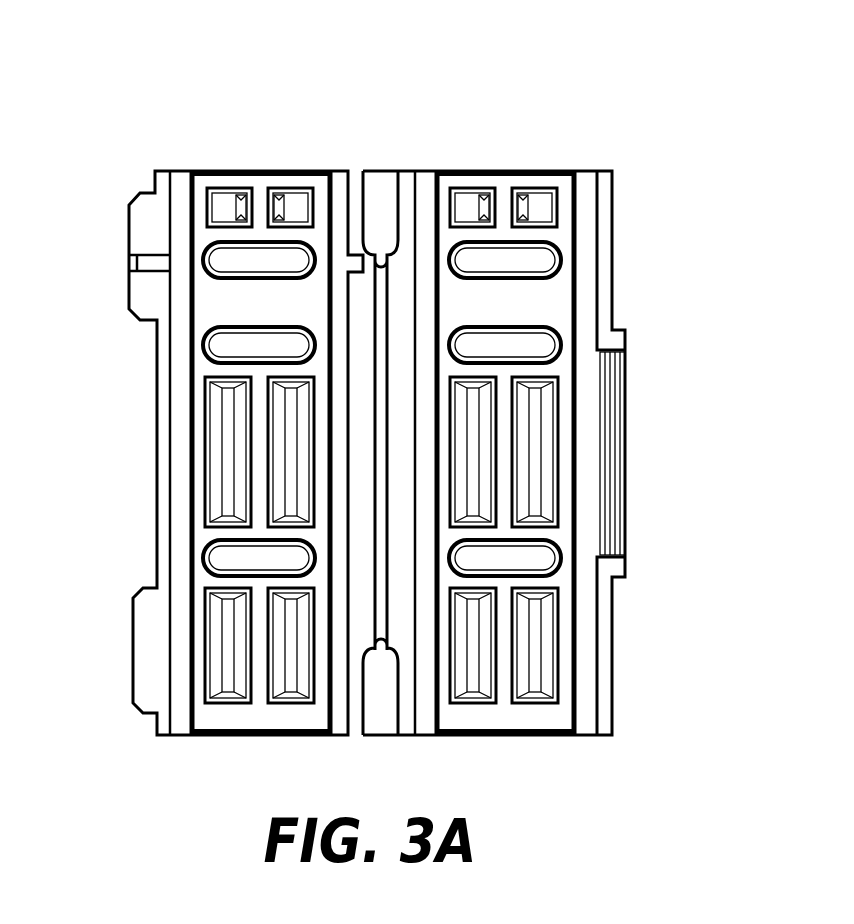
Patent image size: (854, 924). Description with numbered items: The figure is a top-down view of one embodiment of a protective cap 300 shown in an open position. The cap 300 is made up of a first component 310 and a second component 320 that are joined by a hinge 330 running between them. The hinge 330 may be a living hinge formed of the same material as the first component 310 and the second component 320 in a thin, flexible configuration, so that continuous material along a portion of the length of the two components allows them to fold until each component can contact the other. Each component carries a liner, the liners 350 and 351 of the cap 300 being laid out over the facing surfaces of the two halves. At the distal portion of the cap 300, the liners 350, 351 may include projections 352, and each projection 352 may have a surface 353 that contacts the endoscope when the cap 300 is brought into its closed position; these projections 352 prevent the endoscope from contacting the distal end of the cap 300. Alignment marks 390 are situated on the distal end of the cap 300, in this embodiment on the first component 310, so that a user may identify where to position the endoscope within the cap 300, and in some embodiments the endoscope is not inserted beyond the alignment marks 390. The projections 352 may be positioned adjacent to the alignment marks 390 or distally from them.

The cap 300 is at (428, 120).
The first component 310 is at (130, 357).
The second component 320 is at (640, 286).
The hinge 330 is at (377, 668).
The liner 350 is at (190, 742).
The liner 351 is at (582, 742).
The projections 352 is at (518, 192).
The surface 353 is at (278, 192).
The alignment marks 390 is at (126, 258).